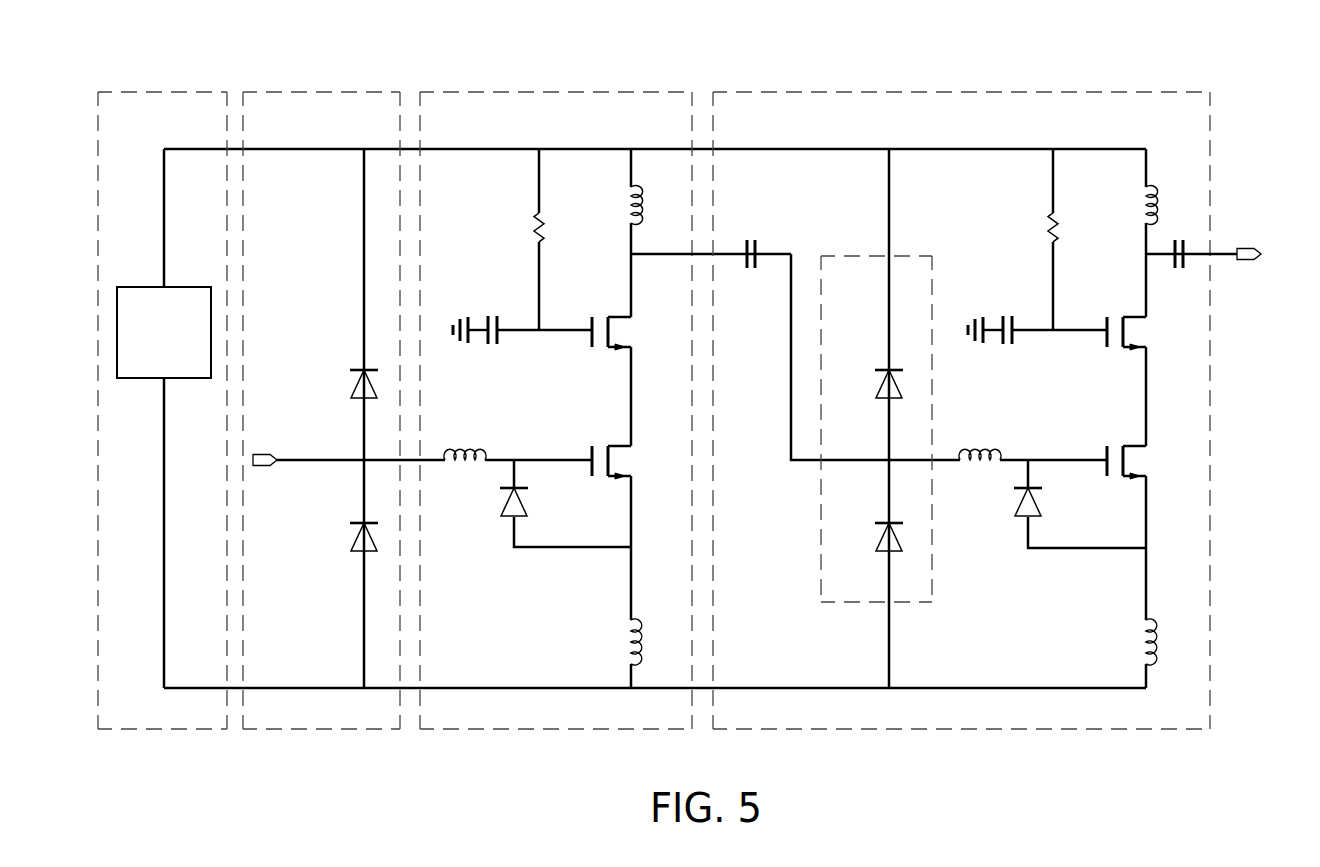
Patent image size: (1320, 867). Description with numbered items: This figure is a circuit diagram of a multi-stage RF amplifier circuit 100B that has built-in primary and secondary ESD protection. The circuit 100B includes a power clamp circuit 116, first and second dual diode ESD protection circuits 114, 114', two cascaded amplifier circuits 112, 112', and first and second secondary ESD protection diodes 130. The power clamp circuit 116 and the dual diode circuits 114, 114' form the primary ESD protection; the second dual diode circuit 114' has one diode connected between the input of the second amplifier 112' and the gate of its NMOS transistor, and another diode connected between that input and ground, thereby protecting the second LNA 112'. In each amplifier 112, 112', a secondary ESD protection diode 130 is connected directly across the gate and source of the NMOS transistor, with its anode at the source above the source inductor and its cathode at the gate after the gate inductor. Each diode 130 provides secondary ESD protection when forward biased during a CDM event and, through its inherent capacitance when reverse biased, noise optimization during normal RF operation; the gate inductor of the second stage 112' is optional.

The multi-stage RF amplifier circuit 100B is at (1001, 780).
The amplifier circuit 112 is at (605, 390).
The second amplifier circuit 112' is at (1009, 390).
The first dual diode ESD protection circuit 114 is at (344, 390).
The second dual diode ESD protection circuit 114' is at (897, 418).
The power clamp circuit 116 is at (168, 93).
The secondary ESD protection diode 130 is at (1238, 525).